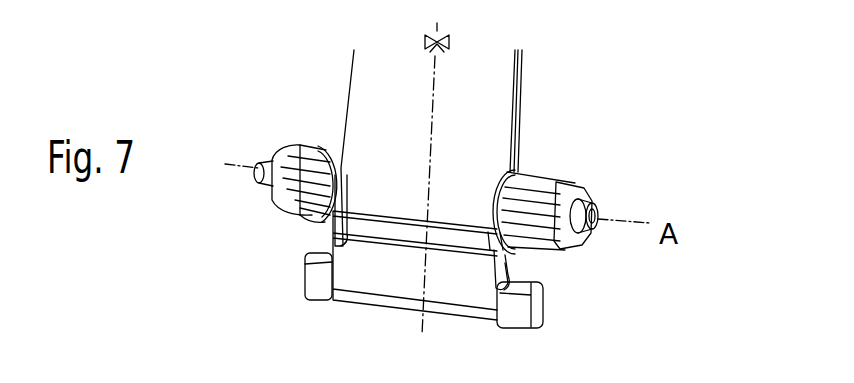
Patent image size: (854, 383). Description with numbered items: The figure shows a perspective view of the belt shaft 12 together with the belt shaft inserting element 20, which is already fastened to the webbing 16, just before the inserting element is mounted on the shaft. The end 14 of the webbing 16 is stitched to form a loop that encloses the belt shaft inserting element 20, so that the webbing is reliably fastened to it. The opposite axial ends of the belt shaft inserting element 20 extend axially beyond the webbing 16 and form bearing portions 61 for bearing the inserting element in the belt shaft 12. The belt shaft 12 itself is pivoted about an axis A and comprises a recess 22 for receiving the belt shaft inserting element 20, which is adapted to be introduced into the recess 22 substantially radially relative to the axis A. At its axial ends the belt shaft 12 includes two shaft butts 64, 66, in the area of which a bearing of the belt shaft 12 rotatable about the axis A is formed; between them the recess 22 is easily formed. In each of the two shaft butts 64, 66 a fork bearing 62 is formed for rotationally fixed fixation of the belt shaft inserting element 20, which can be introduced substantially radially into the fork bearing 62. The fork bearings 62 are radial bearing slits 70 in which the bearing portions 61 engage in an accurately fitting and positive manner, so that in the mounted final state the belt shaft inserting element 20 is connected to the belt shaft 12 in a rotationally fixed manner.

The belt shaft 12 is at (594, 188).
The end of the webbing 14 is at (369, 313).
The webbing 16 is at (493, 94).
The belt shaft inserting element 20 is at (510, 268).
The recess 22 is at (339, 168).
The bearing portions 61 is at (313, 277).
The fork bearing 62 is at (344, 272).
The shaft butt 64 is at (299, 160).
The shaft butt 66 is at (530, 182).
The radial bearing slits 70 is at (340, 189).